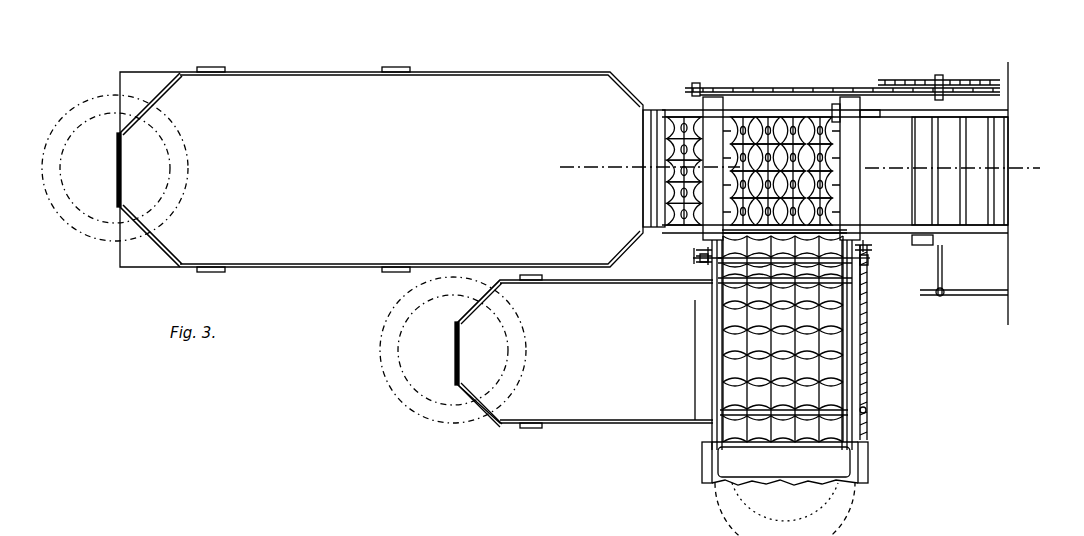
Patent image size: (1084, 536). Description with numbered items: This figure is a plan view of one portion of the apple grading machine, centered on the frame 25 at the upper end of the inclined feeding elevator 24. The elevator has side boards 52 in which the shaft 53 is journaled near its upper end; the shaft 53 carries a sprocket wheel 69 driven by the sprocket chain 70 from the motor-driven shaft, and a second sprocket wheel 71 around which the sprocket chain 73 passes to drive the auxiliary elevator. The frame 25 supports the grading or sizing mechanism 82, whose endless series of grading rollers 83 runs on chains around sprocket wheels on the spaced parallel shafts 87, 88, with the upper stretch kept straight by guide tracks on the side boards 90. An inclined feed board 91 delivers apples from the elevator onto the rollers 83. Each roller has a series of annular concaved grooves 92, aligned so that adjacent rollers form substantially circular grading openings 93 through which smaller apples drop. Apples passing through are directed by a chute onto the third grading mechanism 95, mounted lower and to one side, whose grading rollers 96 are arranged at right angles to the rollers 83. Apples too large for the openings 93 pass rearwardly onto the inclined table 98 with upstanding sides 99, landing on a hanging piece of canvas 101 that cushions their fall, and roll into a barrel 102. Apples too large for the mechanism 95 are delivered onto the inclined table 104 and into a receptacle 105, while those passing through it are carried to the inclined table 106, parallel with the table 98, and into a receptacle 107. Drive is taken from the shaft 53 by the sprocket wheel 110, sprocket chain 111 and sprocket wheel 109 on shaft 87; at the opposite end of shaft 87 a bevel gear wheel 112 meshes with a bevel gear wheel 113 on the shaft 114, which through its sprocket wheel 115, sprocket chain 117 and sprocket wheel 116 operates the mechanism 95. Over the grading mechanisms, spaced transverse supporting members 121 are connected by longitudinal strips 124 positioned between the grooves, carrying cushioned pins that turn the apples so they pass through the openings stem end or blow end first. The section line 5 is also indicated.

The section line 5 is at (795, 172).
The feeding elevator 24 is at (1010, 113).
The frame 25 is at (914, 246).
The side boards 52 is at (998, 104).
The shaft 53 is at (943, 268).
The sprocket wheel 69 is at (882, 82).
The sprocket chain 70 is at (965, 82).
The second sprocket wheel 71 is at (921, 297).
The sprocket chain 73 is at (985, 297).
The grading or sizing mechanism 82 is at (773, 118).
The grading rollers 83 is at (692, 214).
The shaft 87 is at (704, 95).
The shaft 88 is at (865, 250).
The side boards 90 is at (815, 108).
The inclined feed board 91 is at (887, 193).
The annular concaved grooves 92 is at (742, 118).
The grading openings or passages 93 is at (756, 128).
The third grading mechanism 95 is at (840, 347).
The grading rollers 96 is at (725, 323).
The inclined table 98 is at (380, 169).
The upstanding sides 99 is at (517, 72).
The piece of canvas 101 is at (655, 137).
The barrel 102 is at (100, 236).
The inclined table 104 is at (868, 469).
The barrel or other receptacle 105 is at (848, 500).
The inclined table 106 is at (584, 351).
The barrel or other receptacle 107 is at (435, 412).
The sprocket wheel 109 is at (696, 90).
The sprocket wheel 110 is at (968, 88).
The sprocket chain 111 is at (805, 90).
The bevel gear wheel 112 is at (712, 290).
The bevel gear wheel 113 is at (700, 318).
The shaft 114 is at (823, 260).
The sprocket wheel 115 is at (862, 266).
The sprocket wheel 116 is at (866, 410).
The sprocket chain 117 is at (866, 400).
The transverse supporting members 121 is at (843, 104).
The longitudinal strips 124 is at (668, 157).